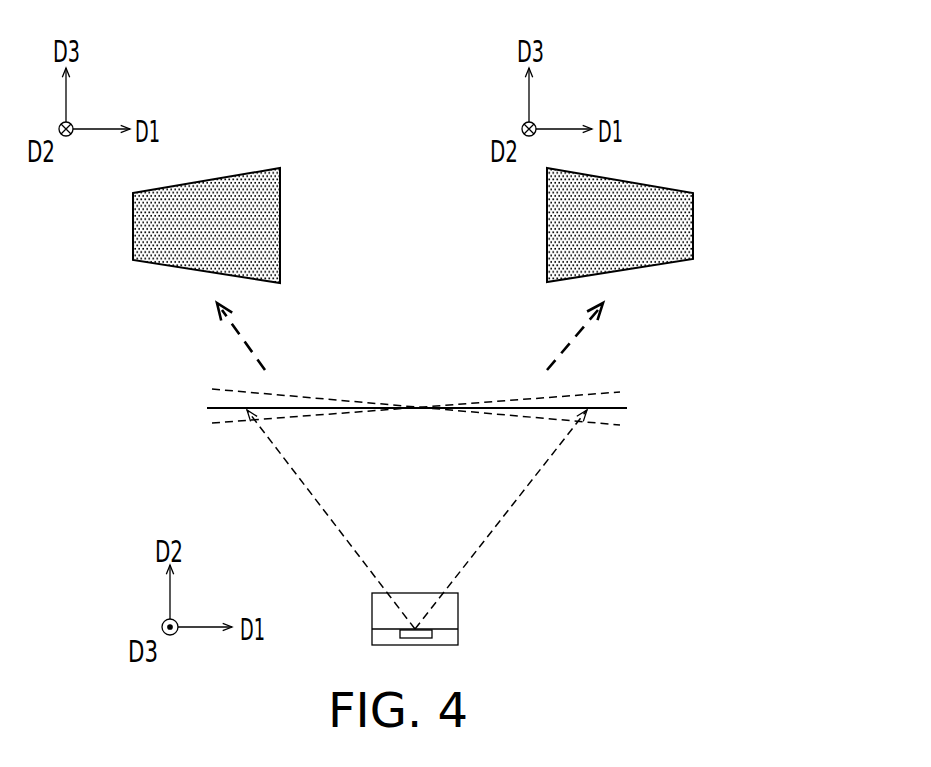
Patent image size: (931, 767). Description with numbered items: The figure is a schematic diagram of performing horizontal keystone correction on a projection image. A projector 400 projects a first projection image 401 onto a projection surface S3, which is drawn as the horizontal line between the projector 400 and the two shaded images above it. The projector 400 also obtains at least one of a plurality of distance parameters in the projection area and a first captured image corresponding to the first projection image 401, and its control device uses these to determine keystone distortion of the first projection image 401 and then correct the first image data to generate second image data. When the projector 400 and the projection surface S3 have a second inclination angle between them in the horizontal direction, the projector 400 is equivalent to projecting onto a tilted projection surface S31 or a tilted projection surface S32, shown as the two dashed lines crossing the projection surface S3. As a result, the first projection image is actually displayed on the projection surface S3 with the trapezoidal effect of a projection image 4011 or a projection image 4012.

The projection image 4011 is at (282, 219).
The projection image 4012 is at (694, 219).
The first projection image 401 is at (207, 408).
The projection surface S3 is at (618, 412).
The projection surface S31 is at (603, 430).
The projection surface S32 is at (608, 391).
The projector 400 is at (459, 618).